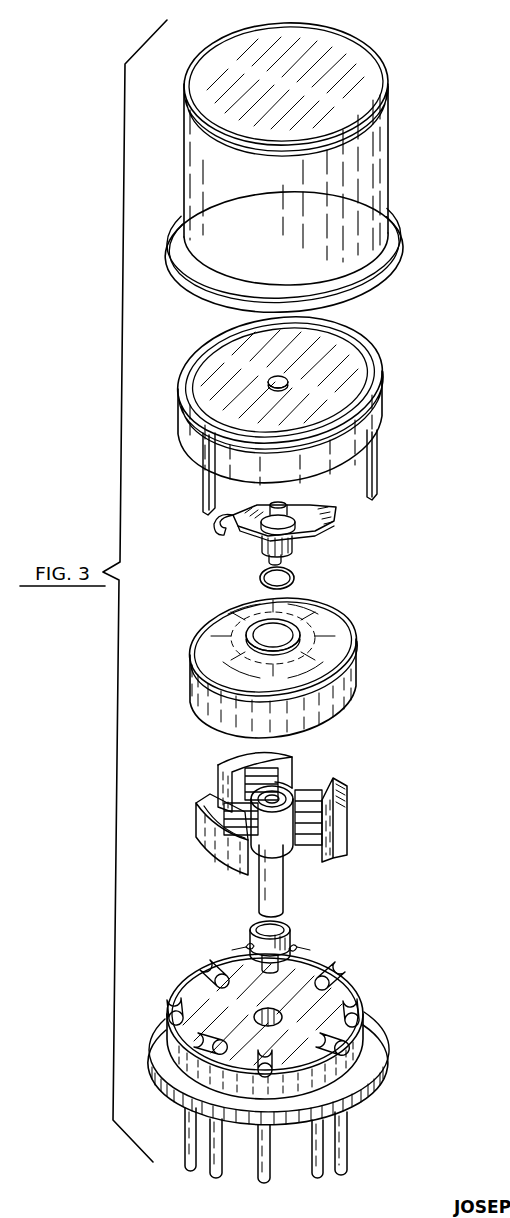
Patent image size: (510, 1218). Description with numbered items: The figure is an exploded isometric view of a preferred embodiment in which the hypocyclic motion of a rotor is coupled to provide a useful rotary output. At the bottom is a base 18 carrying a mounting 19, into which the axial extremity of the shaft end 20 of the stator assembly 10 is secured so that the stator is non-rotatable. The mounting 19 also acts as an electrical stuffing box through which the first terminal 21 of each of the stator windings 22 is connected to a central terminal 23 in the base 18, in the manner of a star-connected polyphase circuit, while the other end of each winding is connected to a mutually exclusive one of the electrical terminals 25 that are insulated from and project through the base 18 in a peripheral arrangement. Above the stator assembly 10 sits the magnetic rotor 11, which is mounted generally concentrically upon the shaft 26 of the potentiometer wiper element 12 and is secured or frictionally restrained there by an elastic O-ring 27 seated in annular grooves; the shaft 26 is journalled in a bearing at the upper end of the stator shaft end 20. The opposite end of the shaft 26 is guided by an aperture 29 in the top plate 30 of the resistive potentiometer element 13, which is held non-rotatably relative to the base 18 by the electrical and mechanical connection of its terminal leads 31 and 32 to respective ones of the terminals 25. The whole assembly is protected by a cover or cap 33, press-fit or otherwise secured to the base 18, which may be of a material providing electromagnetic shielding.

The cover or cap 33 is at (388, 162).
The resistive potentiometer element 13 is at (310, 394).
The top plate 30 is at (250, 409).
The aperture 29 is at (277, 389).
The terminal lead 31 is at (203, 485).
The terminal lead 32 is at (377, 462).
The potentiometer wiper element 12 is at (325, 529).
The shaft 26 is at (265, 545).
The elastic O-ring 27 is at (294, 583).
The magnetic rotor 11 is at (345, 699).
The stator assembly 10 is at (283, 815).
The stator windings 22 is at (309, 838).
The shaft end 20 is at (272, 882).
The mounting 19 is at (290, 935).
The first terminal 21 is at (298, 948).
The base 18 is at (287, 1079).
The electrical terminals 25 is at (217, 1172).
The central terminal 23 is at (268, 1166).